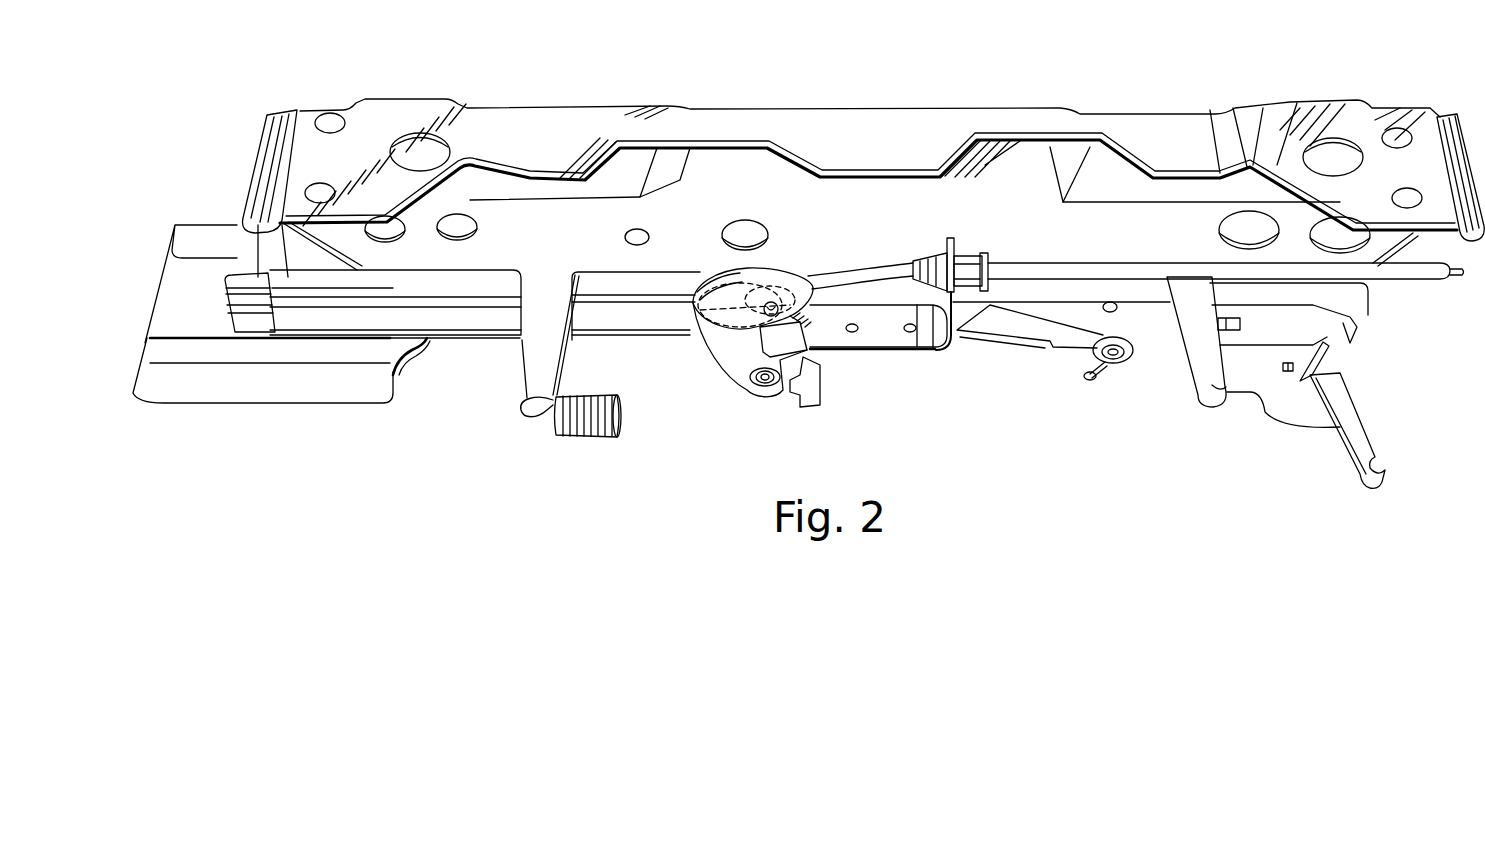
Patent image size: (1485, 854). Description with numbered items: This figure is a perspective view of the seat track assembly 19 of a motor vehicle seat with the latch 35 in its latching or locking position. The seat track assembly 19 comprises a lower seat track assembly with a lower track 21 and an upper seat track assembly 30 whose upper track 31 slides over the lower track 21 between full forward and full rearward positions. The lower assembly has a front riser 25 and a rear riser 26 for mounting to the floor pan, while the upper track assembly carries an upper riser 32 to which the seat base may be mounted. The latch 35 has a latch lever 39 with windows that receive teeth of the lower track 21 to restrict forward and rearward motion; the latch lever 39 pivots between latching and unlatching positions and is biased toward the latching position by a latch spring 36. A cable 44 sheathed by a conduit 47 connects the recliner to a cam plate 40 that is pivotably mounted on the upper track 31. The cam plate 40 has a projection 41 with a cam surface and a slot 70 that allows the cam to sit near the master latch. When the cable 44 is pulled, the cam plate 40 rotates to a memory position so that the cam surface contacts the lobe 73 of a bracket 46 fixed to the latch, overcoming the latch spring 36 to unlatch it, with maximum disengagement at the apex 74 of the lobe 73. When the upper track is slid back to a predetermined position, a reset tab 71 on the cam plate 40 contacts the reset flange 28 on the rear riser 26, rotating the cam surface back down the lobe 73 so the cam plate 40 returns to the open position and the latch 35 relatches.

The seat track assembly 19 is at (1452, 113).
The lower track 21 is at (253, 323).
The front riser 25 is at (1320, 367).
The rear riser 26 is at (360, 400).
The reset flange 28 is at (410, 367).
The upper seat track assembly 30 is at (264, 106).
The upper track 31 is at (278, 276).
The upper riser 32 is at (884, 148).
The latch 35 is at (1253, 335).
The latch spring 36 is at (1047, 333).
The latch lever 39 is at (1153, 330).
The cam plate 40 is at (737, 393).
The projection 41 is at (712, 272).
The cable 44 is at (895, 263).
The bracket 46 is at (910, 343).
The conduit 47 is at (1118, 265).
The slot 70 is at (787, 367).
The reset tab 71 is at (813, 397).
The lobe 73 is at (612, 393).
The apex 74 is at (763, 273).